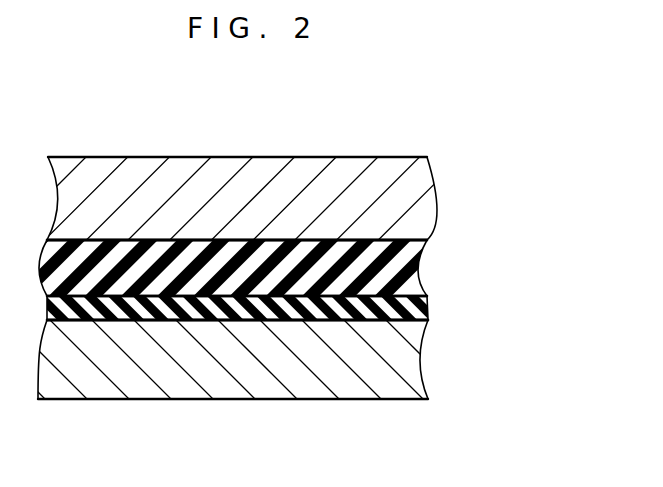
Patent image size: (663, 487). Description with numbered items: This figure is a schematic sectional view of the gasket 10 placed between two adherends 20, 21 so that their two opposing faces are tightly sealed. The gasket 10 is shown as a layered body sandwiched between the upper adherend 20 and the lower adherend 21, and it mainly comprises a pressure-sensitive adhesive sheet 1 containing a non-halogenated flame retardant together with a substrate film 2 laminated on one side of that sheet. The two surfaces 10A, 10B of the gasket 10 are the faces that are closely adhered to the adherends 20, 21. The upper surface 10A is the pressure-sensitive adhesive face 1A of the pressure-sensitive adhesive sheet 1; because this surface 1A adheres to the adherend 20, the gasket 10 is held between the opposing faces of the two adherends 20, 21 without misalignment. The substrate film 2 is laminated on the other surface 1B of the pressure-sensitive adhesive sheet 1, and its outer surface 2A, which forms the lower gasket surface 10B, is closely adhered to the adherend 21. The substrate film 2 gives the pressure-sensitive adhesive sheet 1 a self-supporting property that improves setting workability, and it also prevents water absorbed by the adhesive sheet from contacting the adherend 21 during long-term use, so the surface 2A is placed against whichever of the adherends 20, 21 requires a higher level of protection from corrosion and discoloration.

The adherend 20 is at (412, 192).
The adherend 21 is at (410, 368).
The pressure-sensitive adhesive sheet 1 is at (417, 265).
The substrate film 2 is at (410, 311).
The gasket 10 is at (297, 279).
The surface of the gasket 10A is at (290, 240).
The surface of the pressure-sensitive adhesive sheet 1A is at (258, 165).
The surface of the pressure-sensitive adhesive sheet 1B is at (158, 297).
The surface of the gasket 10B is at (303, 320).
The surface of the substrate film 2A is at (241, 395).